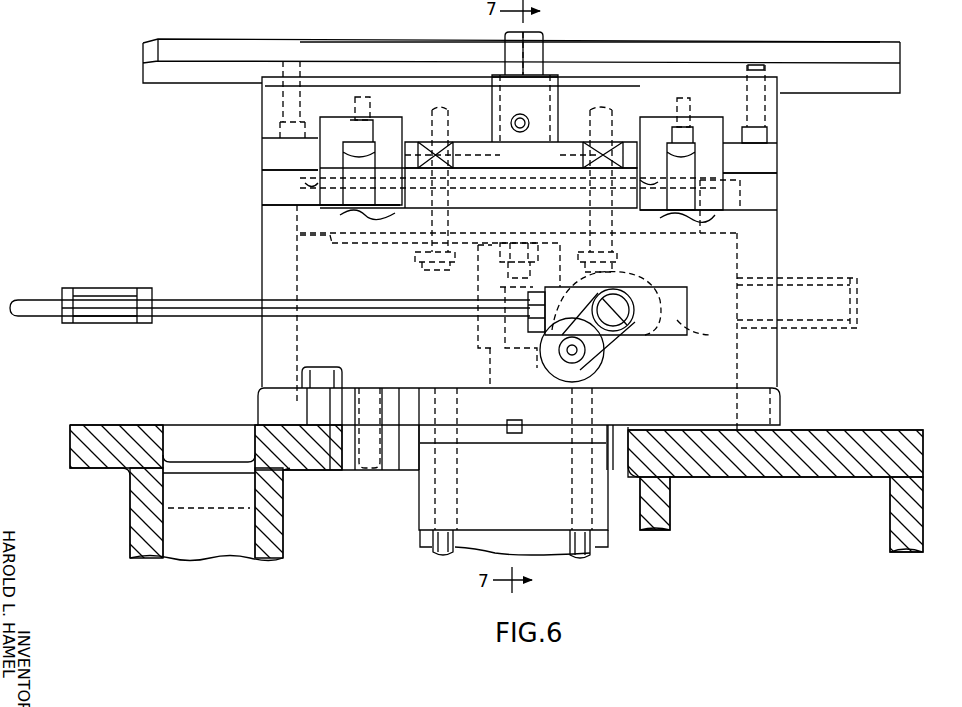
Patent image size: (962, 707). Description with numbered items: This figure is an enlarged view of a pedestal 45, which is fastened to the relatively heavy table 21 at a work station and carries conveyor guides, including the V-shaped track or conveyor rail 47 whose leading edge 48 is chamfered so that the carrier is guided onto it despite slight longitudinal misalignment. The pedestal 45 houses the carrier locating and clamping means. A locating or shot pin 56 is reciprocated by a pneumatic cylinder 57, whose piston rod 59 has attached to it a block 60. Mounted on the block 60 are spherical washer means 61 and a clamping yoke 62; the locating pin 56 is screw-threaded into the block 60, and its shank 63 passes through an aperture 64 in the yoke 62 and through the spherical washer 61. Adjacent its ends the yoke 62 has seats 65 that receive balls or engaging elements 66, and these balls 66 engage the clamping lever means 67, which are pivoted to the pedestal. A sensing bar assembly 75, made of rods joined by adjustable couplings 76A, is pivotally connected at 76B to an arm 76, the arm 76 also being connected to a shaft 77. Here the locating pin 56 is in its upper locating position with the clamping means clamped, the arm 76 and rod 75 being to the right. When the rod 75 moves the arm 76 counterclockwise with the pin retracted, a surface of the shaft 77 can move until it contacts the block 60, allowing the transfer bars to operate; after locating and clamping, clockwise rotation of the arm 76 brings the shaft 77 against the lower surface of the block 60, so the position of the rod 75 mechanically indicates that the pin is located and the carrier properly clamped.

The table 21 is at (915, 440).
The pedestal 45 is at (780, 243).
The V-shaped track conveyor rail 47 is at (645, 47).
The chamfered leading edge 48 is at (142, 53).
The locating pin 56 is at (548, 32).
The pneumatic cylinder 57 is at (585, 515).
The piston rod 59 is at (498, 367).
The block 60 is at (490, 330).
The spherical washer means 61 is at (480, 255).
The clamping yoke 62 is at (718, 226).
The shank 63 is at (522, 167).
The aperture 64 is at (500, 214).
The seats 65 is at (340, 215).
The balls 66 is at (305, 188).
The clamping lever means 67 is at (350, 160).
The sensing bar assembly 75 is at (45, 300).
The arm 76 is at (622, 338).
The adjustable coupling 76A is at (108, 327).
The pivotal connection 76B is at (667, 335).
The shaft 77 is at (600, 372).